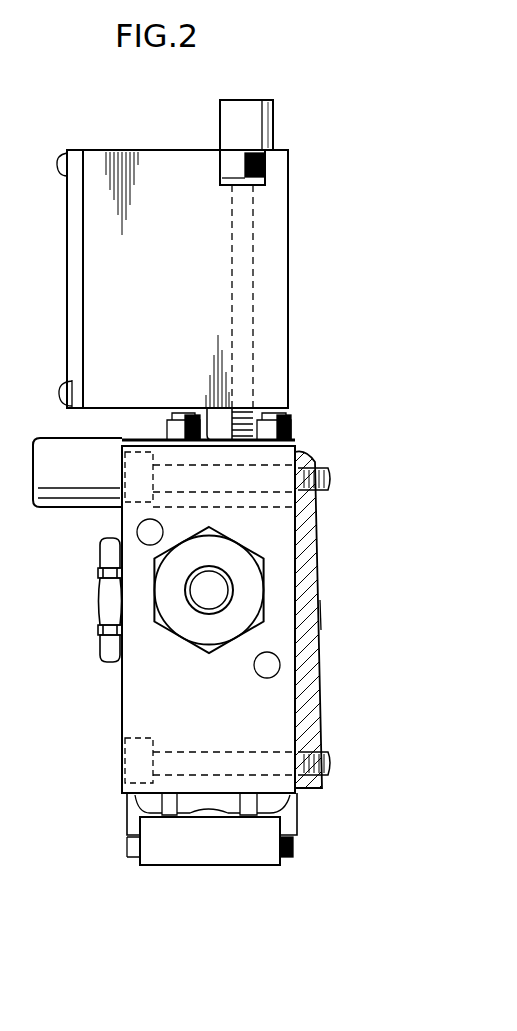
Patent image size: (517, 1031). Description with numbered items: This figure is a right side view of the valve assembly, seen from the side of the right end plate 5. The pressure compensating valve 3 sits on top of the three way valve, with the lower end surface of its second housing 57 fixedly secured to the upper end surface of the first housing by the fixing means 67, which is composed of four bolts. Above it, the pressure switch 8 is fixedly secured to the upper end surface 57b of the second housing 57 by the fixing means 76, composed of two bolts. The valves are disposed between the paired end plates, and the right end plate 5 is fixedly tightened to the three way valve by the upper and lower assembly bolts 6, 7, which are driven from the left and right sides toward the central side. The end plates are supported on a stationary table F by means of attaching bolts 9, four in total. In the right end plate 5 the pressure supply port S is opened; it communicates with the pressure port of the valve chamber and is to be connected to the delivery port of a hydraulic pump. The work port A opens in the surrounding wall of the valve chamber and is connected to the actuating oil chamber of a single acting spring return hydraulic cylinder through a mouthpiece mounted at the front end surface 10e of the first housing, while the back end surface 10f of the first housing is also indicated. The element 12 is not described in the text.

The pressure switch 8 is at (64, 263).
The fixing means 76 is at (226, 160).
The pressure compensating valve 3 is at (52, 432).
The second housing 57 is at (130, 440).
The fixing means 67 is at (183, 420).
The upper end surface 57b is at (296, 432).
The right end plate 5 is at (122, 706).
The front end surface 10e is at (122, 672).
The stationary table F is at (314, 575).
The back end surface 10f is at (300, 613).
The attaching bolts 9 is at (324, 470).
The upper assembly bolt 6 is at (137, 530).
The lower assembly bolt 7 is at (281, 665).
The pressure supply port S is at (226, 578).
The work port A is at (98, 600).
The connector 12 is at (127, 848).